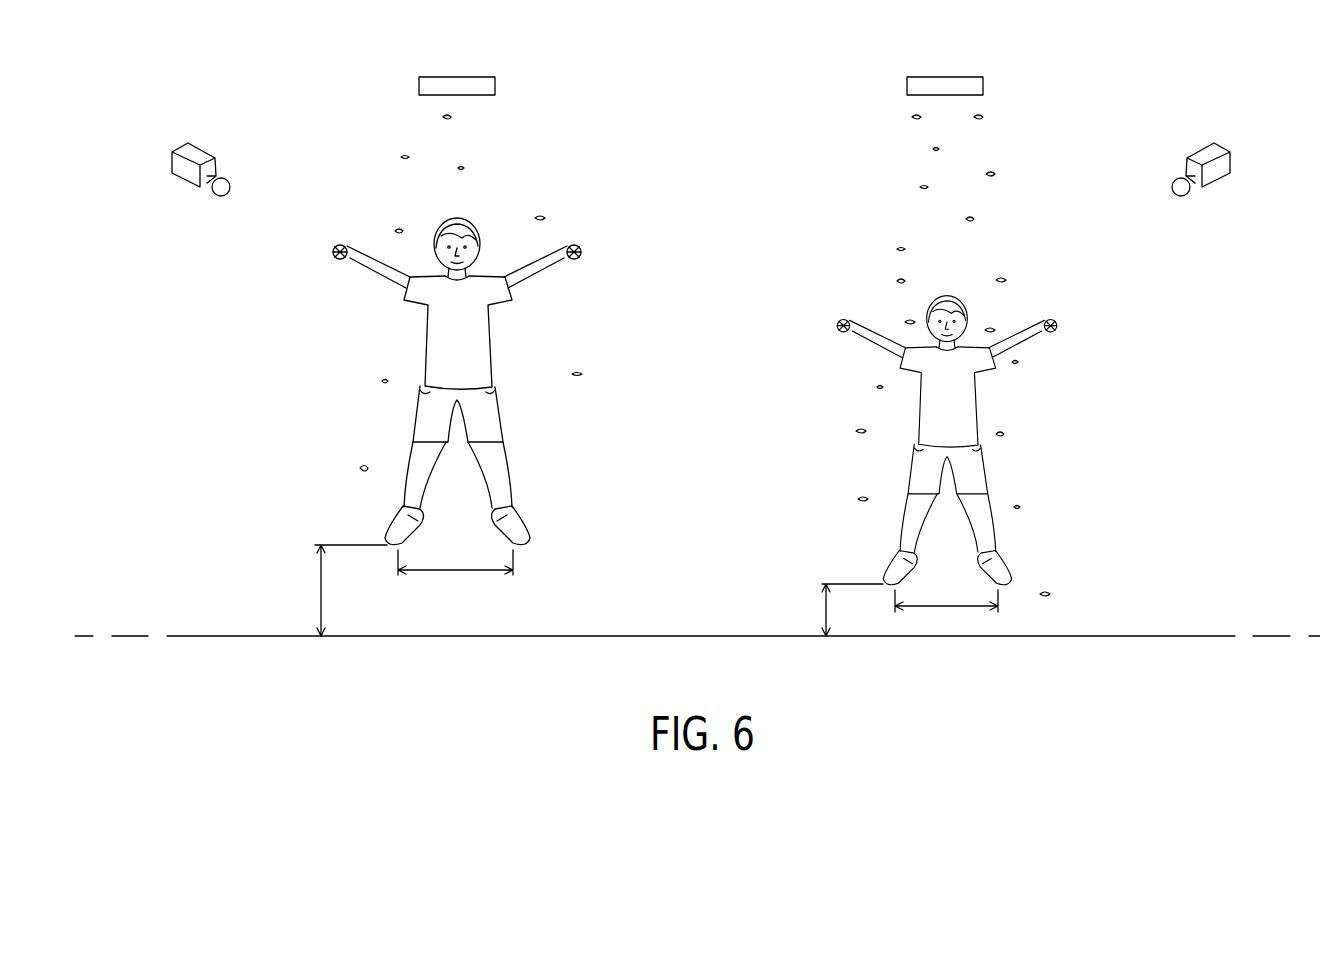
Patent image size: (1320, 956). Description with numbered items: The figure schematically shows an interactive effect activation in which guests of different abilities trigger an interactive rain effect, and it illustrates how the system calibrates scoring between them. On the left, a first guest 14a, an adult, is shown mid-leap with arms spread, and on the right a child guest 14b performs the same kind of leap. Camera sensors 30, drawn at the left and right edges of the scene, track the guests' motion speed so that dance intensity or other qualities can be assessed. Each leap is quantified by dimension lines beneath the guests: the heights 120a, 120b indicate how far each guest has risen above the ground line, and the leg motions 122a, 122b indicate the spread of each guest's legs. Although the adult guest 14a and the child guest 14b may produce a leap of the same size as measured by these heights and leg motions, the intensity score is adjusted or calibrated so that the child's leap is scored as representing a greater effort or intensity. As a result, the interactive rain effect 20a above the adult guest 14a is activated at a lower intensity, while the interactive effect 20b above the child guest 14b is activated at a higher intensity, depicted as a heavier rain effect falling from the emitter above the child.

The first guest 14a is at (477, 330).
The child guest 14b is at (968, 388).
The interactive rain effect 20a is at (455, 77).
The interactive effect 20b is at (945, 77).
The camera sensor 30 is at (186, 174).
The height 120a is at (318, 592).
The height 120b is at (822, 612).
The leg motion 122a is at (457, 570).
The leg motion 122b is at (949, 606).